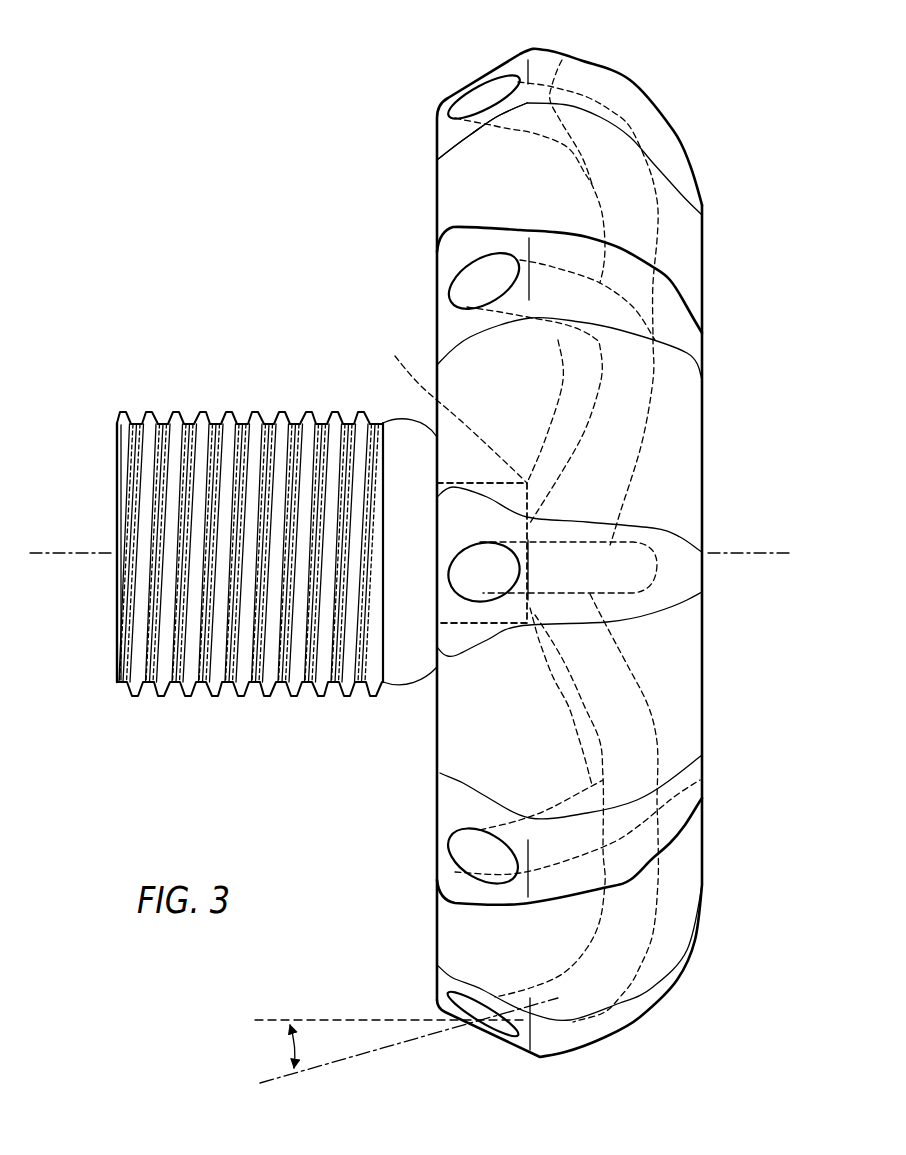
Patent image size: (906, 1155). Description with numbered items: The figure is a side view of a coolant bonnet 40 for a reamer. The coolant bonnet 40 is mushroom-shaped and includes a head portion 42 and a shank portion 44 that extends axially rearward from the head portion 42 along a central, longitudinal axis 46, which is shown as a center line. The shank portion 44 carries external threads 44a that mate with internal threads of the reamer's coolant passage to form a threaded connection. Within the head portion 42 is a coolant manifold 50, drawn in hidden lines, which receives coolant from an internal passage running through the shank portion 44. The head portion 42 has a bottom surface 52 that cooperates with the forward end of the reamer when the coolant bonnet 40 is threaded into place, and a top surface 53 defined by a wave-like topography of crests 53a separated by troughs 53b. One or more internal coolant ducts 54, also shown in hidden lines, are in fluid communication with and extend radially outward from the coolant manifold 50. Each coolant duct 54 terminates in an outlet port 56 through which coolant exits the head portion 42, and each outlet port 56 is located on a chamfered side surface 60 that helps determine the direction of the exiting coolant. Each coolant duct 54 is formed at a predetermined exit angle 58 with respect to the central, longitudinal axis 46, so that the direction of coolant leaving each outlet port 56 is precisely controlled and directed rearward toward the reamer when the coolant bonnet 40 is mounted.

The coolant bonnet 40 is at (750, 130).
The head portion 42 is at (680, 116).
The shank portion 44 is at (266, 393).
The external threads 44a is at (185, 415).
The central, longitudinal axis 46 is at (752, 555).
The coolant manifold 50 is at (460, 420).
The bottom surface 52 is at (435, 200).
The top surface 53 is at (706, 288).
The crests 53a is at (627, 100).
The troughs 53b is at (647, 223).
The internal coolant ducts 54 is at (562, 60).
The outlet port 56 is at (477, 100).
The exit angle 58 is at (290, 1058).
The chamfered side surface 60 is at (478, 72).